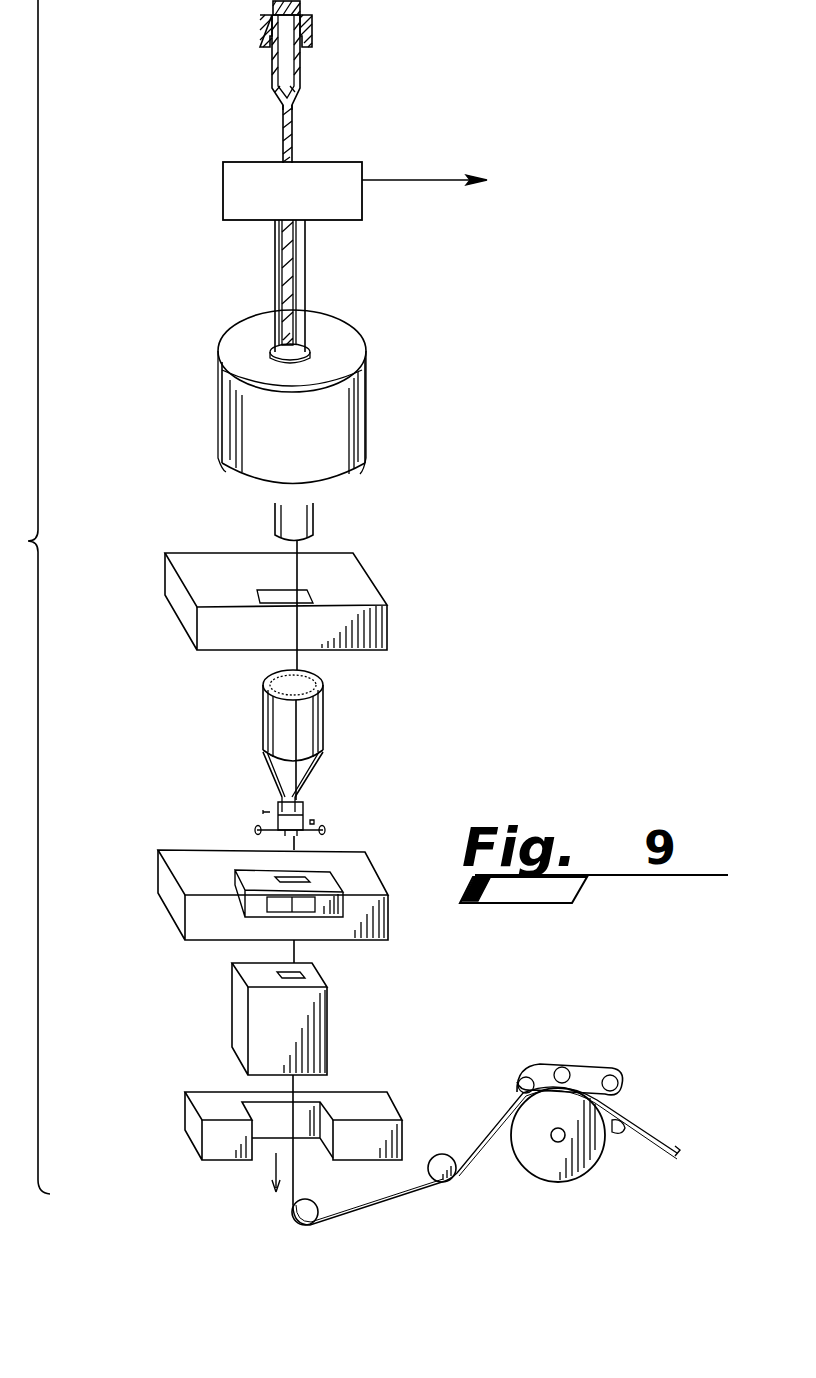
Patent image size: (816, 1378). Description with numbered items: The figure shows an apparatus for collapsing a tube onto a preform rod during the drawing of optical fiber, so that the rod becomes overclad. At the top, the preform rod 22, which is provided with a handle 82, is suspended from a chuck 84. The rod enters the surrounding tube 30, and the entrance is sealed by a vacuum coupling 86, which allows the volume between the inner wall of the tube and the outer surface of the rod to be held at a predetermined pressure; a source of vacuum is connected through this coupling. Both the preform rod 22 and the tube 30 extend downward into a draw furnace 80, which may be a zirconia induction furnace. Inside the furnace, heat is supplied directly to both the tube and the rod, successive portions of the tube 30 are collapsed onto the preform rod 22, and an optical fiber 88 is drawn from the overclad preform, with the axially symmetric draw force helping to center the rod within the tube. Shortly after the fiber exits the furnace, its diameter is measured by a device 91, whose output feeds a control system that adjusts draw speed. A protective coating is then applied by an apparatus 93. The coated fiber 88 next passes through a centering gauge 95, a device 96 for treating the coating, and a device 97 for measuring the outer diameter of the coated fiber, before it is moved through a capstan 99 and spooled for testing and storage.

The preform rod 22 is at (292, 133).
The tube 30 is at (273, 278).
The draw furnace 80 is at (367, 410).
The handle 82 is at (300, 73).
The chuck 84 is at (312, 30).
The vacuum coupling 86 is at (222, 180).
The optical fiber 88 is at (300, 560).
The diameter measuring device 91 is at (367, 585).
The coating apparatus 93 is at (263, 728).
The centering gauge 95 is at (172, 897).
The coating treating device 96 is at (238, 1030).
The coated fiber outer diameter measuring device 97 is at (190, 1140).
The capstan 99 is at (590, 1157).